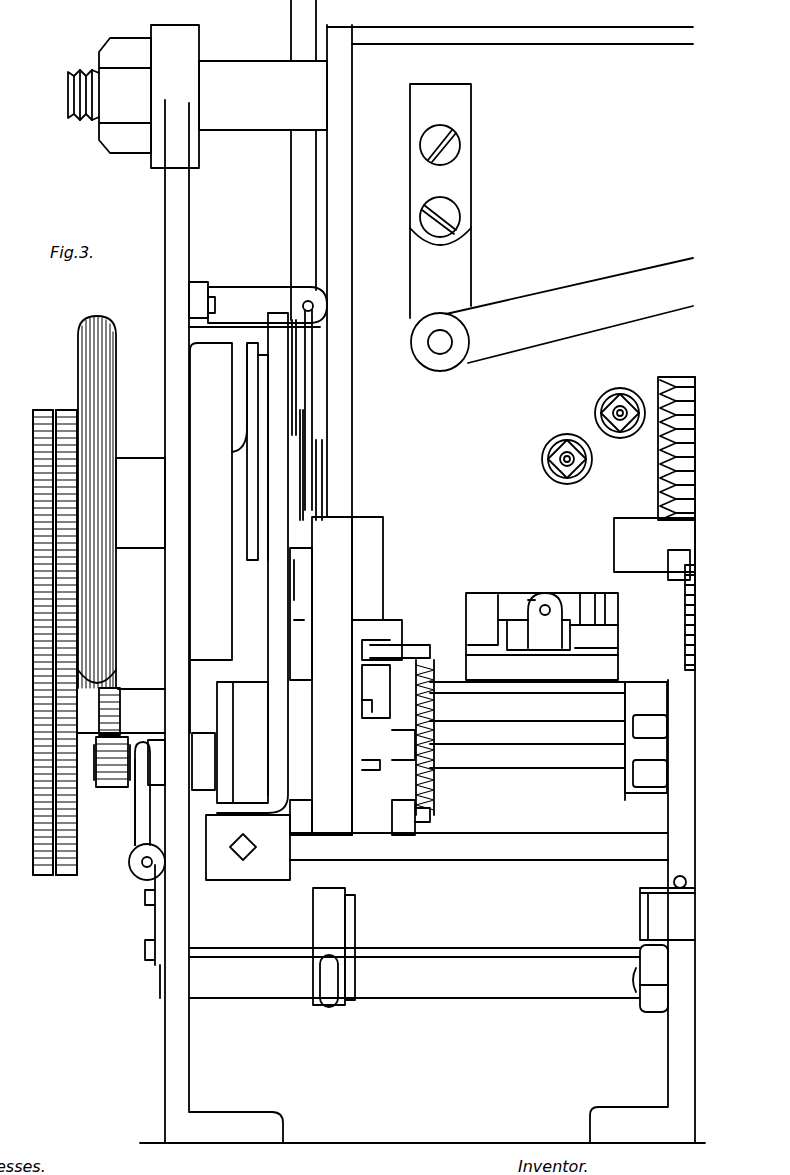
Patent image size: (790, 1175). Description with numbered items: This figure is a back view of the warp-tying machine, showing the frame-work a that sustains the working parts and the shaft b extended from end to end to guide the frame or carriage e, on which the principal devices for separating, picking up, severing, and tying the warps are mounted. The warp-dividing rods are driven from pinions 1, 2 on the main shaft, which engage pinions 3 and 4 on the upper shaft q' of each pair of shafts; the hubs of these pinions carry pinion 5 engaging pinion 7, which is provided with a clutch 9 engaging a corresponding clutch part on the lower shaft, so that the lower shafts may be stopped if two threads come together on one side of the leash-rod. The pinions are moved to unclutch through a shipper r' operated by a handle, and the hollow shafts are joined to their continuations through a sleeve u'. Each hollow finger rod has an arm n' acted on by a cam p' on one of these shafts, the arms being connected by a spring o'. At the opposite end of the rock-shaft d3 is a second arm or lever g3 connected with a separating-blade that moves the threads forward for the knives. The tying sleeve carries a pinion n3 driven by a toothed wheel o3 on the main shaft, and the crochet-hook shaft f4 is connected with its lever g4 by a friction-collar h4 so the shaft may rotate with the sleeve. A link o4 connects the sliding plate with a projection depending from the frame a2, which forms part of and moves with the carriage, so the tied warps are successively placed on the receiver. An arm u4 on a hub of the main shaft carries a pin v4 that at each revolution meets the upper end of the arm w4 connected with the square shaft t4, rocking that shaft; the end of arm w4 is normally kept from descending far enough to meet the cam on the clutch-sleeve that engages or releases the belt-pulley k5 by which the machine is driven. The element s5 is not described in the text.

The frame-work a is at (422, 571).
The shaft b is at (197, 95).
The frame or carriage e is at (500, 201).
The second arm or lever g3 is at (552, 314).
The rock-shaft d3 is at (436, 342).
The toothed wheel o3 is at (687, 448).
The pinion n3 is at (690, 655).
The pinion 1 is at (66, 629).
The pinion 2 is at (43, 630).
The pinion 3 is at (73, 642).
The pinion 4 is at (38, 642).
The pinion 5 is at (120, 692).
The pinion 7 is at (112, 771).
The clutch 9 is at (147, 806).
The shipper r' is at (129, 802).
The belt-pulley k5 is at (254, 471).
The pin v4 is at (256, 440).
The arm u4 is at (241, 398).
The arm w4 is at (267, 550).
The rod s5 is at (306, 415).
The frame a2 is at (286, 762).
The arm n' is at (391, 727).
The cam p' is at (388, 717).
The spring o' is at (435, 737).
The friction-collar h4 is at (542, 636).
The lever g4 is at (532, 602).
The shaft f4 is at (594, 620).
The shaft q' is at (527, 741).
The sleeve u' is at (646, 737).
The shaft t4 is at (479, 846).
The link o4 is at (429, 978).